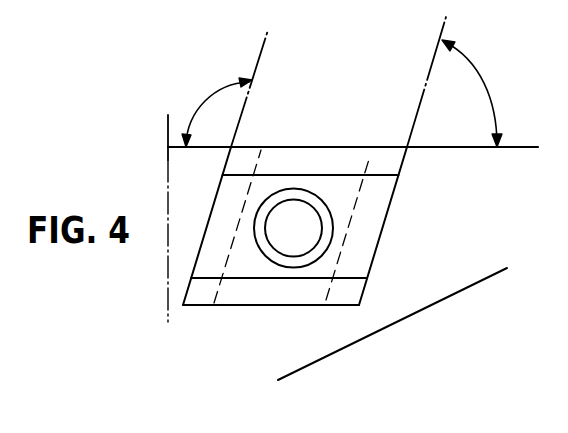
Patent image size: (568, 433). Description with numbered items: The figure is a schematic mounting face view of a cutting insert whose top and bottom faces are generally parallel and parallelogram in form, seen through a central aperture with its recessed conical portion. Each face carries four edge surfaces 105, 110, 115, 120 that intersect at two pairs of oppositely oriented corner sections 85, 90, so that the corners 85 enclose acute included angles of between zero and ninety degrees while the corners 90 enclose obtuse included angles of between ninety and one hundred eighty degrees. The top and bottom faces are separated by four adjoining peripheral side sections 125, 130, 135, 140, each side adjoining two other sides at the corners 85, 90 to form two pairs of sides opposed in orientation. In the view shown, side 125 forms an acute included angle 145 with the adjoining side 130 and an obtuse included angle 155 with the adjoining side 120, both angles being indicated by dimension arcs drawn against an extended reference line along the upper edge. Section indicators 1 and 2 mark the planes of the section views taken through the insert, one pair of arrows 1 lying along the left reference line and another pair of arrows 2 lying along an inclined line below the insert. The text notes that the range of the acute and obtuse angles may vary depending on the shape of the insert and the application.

The section line 1- 1 is at (160, 133).
The section line 2- 2 is at (297, 378).
The corner section 85 is at (408, 152).
The corner section 90 is at (239, 144).
The edge surface 105 is at (296, 176).
The edge surface 110 is at (378, 208).
The edge surface 115 is at (259, 304).
The edge surface 120 is at (215, 200).
The peripheral side section 125 is at (355, 154).
The peripheral side section 130 is at (392, 226).
The peripheral side section 135 is at (291, 296).
The peripheral side section 140 is at (217, 231).
The acute included angle 145 is at (479, 83).
The obtuse included angle 155 is at (205, 102).